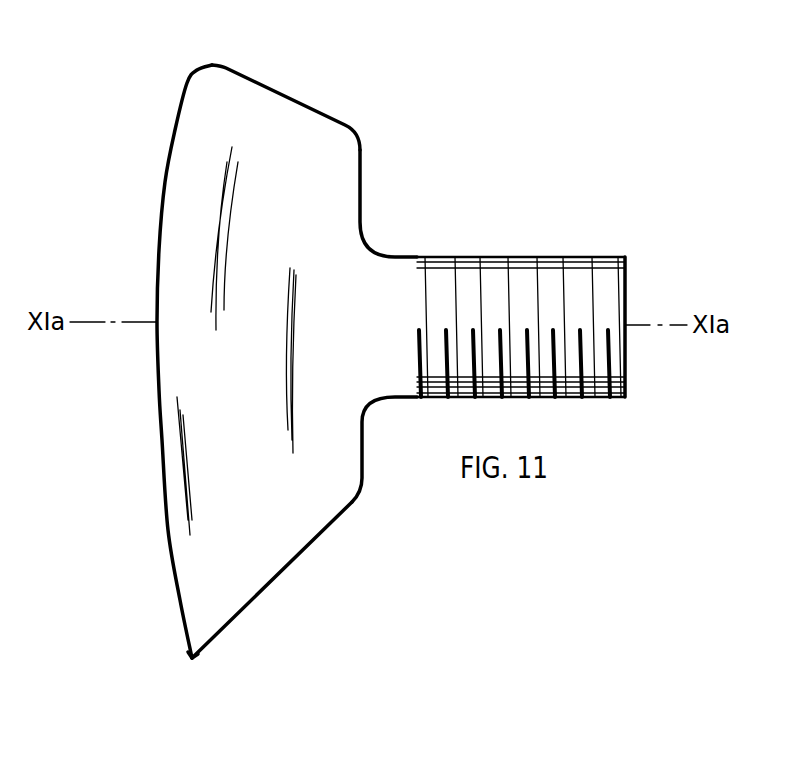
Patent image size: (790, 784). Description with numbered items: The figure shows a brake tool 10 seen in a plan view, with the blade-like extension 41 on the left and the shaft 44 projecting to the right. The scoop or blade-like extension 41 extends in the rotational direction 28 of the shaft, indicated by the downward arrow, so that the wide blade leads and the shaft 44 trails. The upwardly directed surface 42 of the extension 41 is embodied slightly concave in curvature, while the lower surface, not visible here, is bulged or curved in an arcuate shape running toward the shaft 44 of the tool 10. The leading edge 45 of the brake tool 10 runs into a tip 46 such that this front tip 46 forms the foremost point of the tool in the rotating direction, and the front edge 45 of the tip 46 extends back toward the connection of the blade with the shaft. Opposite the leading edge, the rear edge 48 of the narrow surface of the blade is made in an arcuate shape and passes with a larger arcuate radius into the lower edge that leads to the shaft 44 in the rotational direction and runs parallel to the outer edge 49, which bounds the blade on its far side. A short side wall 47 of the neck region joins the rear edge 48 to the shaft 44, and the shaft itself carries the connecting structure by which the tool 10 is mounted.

The brake tool 10 is at (560, 116).
The rotational direction 28 is at (404, 490).
The blade-like extension 41 is at (228, 463).
The surface 42 is at (222, 280).
The shaft 44 is at (513, 253).
The leading edge 45 is at (278, 579).
The tip 46 is at (192, 658).
The neck side wall 47 is at (362, 182).
The rear edge 48 is at (283, 92).
The outer edge 49 is at (165, 182).